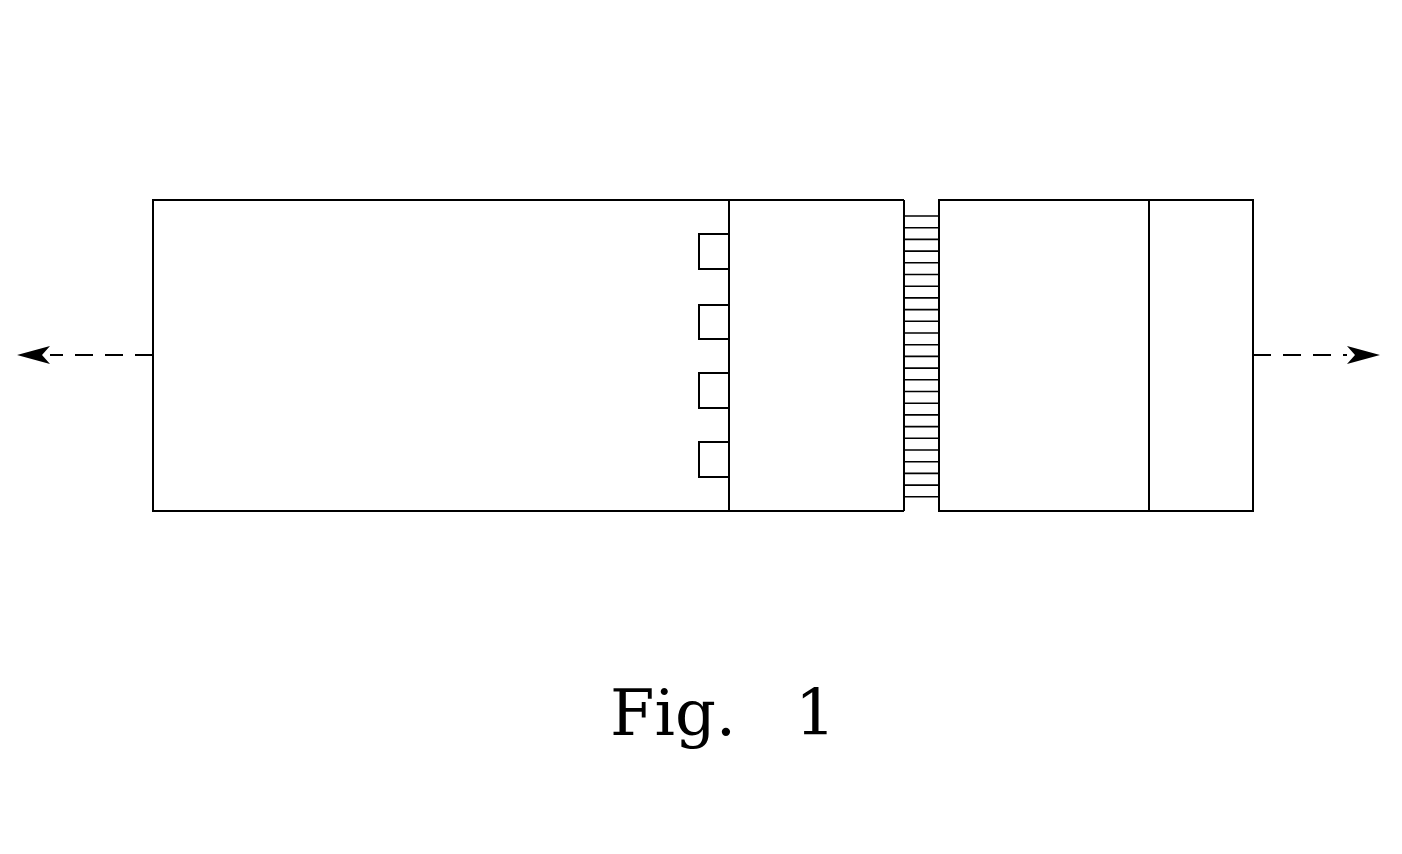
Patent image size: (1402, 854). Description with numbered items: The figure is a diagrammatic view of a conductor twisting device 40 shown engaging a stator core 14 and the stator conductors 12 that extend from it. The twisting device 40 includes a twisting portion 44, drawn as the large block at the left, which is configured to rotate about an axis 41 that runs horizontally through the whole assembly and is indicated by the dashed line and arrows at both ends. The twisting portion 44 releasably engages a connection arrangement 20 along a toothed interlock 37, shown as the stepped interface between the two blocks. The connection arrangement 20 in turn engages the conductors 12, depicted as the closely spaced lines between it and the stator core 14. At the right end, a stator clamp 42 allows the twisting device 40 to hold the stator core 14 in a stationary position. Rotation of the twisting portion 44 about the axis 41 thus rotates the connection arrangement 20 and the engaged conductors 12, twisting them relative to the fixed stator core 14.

The conductor twisting device 40 is at (821, 142).
The twisting portion 44 is at (456, 372).
The connection arrangement 20 is at (830, 372).
The toothed interlock 37 is at (710, 477).
The stator conductors 12 is at (921, 228).
The stator core 14 is at (1058, 372).
The stator clamp 42 is at (1211, 372).
The axis 41 is at (86, 354).